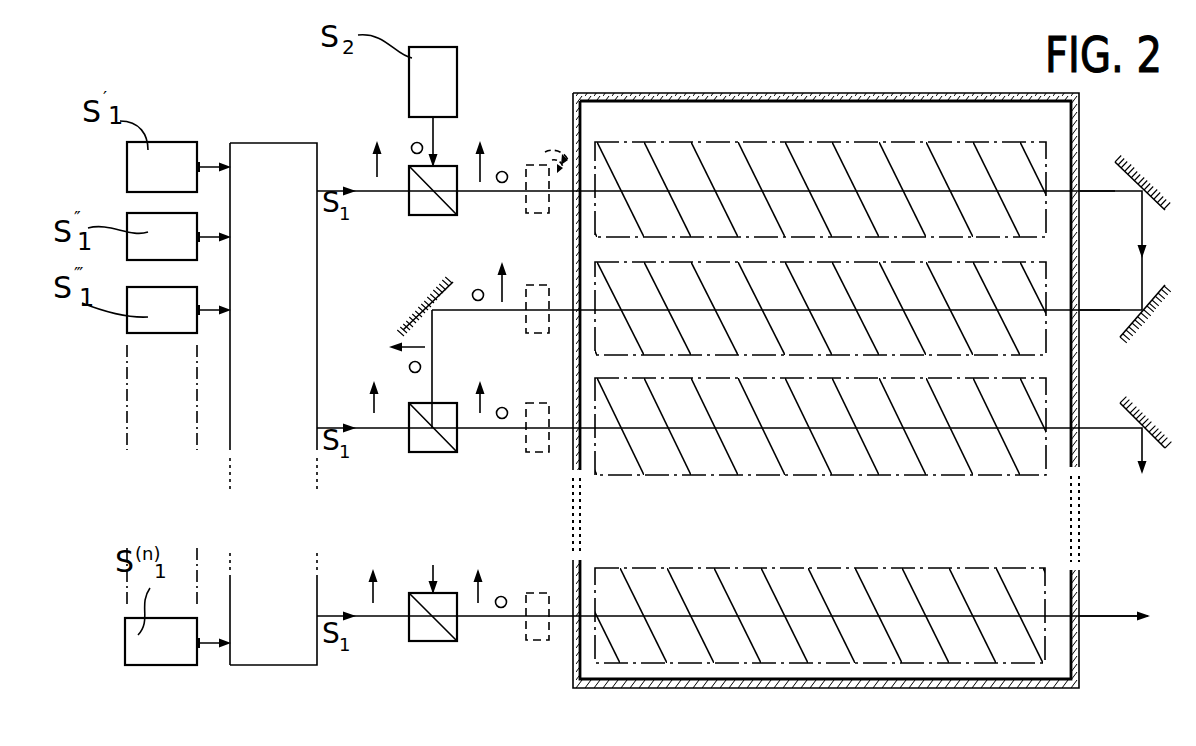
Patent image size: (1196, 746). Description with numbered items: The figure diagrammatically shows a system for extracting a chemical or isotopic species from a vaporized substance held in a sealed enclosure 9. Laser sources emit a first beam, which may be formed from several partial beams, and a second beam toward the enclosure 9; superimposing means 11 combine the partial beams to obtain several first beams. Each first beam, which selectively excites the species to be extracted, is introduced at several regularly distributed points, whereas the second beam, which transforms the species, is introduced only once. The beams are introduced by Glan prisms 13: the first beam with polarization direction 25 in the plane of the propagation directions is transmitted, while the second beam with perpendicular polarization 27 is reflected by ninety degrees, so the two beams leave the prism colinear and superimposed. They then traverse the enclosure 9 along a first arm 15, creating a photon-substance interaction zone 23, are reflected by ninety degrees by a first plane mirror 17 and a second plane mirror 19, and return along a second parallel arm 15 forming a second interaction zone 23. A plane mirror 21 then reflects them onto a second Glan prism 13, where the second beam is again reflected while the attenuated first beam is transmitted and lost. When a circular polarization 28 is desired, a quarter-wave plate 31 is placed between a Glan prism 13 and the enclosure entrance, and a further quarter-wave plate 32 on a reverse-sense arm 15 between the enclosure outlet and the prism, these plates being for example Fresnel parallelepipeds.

The sealed enclosure 9 is at (762, 97).
The superimposing means 11 is at (250, 148).
The Glan prism 13 is at (413, 202).
The parallel arm 15 is at (1092, 188).
The first plane mirror 17 is at (1137, 173).
The second plane mirror 19 is at (1150, 312).
The plane mirror 21 is at (414, 318).
The interaction zone 23 is at (1047, 236).
The polarization direction of beam S1 25 is at (372, 160).
The polarization direction of beam S2 27 is at (414, 144).
The circular polarization 28 is at (560, 142).
The quarter-wave plate 31 is at (540, 214).
The further quarter-wave plate 32 is at (540, 334).